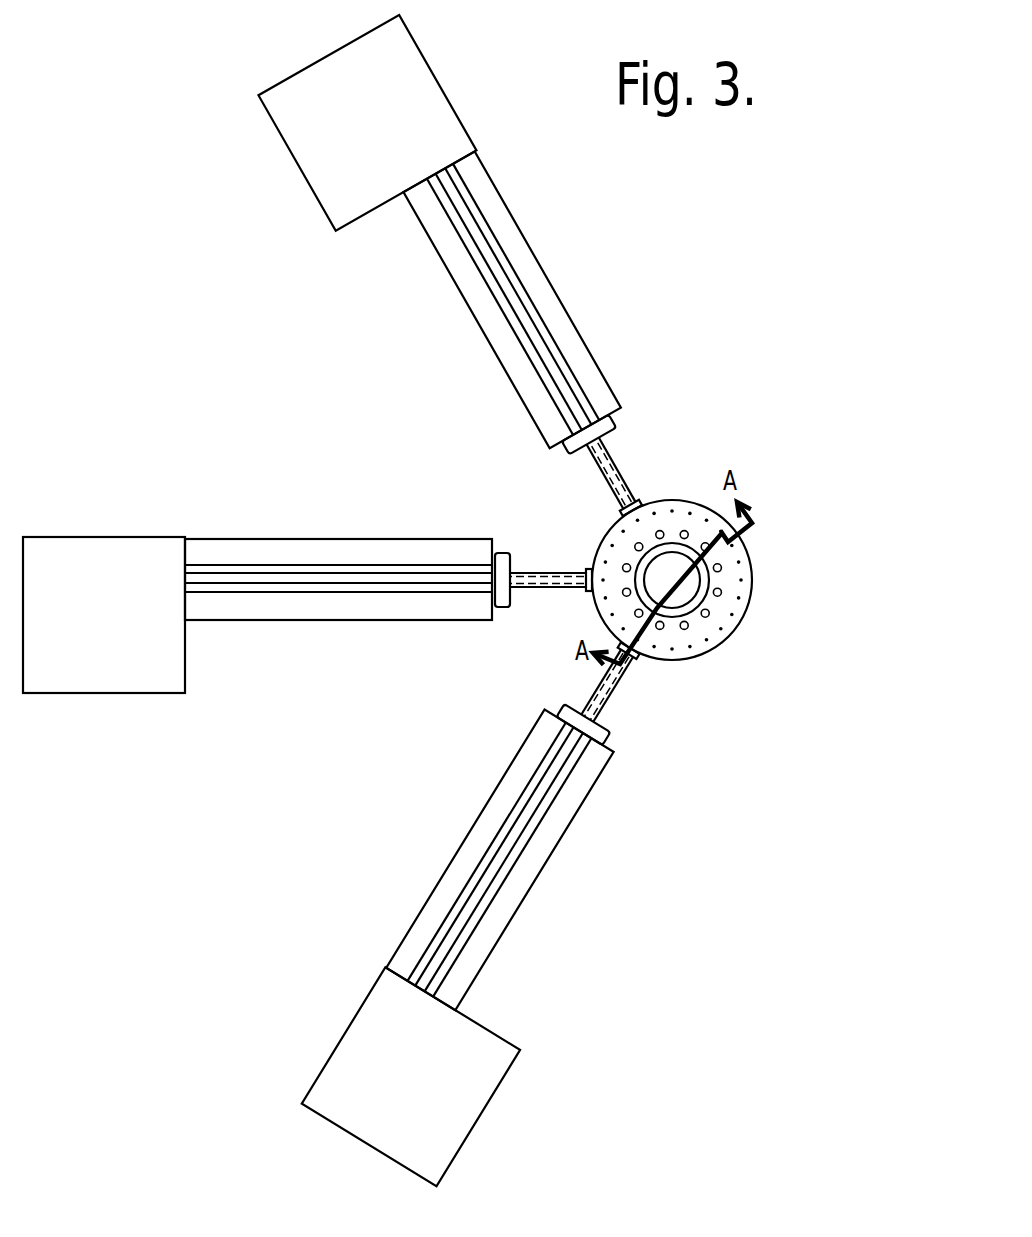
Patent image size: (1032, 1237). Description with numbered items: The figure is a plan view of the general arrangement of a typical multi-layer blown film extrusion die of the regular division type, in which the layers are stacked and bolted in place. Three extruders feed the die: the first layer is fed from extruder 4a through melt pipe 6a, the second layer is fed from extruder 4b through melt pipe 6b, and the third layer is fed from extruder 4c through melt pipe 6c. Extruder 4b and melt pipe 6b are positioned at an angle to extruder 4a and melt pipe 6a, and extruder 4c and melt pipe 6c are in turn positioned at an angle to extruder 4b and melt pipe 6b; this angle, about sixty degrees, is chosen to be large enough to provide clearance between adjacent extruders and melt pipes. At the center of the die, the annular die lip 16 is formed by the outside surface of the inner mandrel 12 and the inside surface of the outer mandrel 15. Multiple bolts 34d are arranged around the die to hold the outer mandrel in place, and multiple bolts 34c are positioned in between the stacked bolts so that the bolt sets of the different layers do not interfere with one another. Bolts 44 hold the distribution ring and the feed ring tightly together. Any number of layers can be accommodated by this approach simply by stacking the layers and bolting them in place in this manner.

The extruder 4a is at (543, 843).
The extruder 4b is at (392, 552).
The extruder 4c is at (562, 317).
The melt pipe 6a is at (612, 677).
The melt pipe 6b is at (548, 580).
The melt pipe 6c is at (613, 477).
The inner mandrel 12 is at (678, 587).
The outer mandrel 15 is at (679, 643).
The annular die lip 16 is at (649, 564).
The multiple bolts 34c is at (695, 618).
The multiple bolts 34d is at (718, 568).
The bolts 44 is at (607, 553).